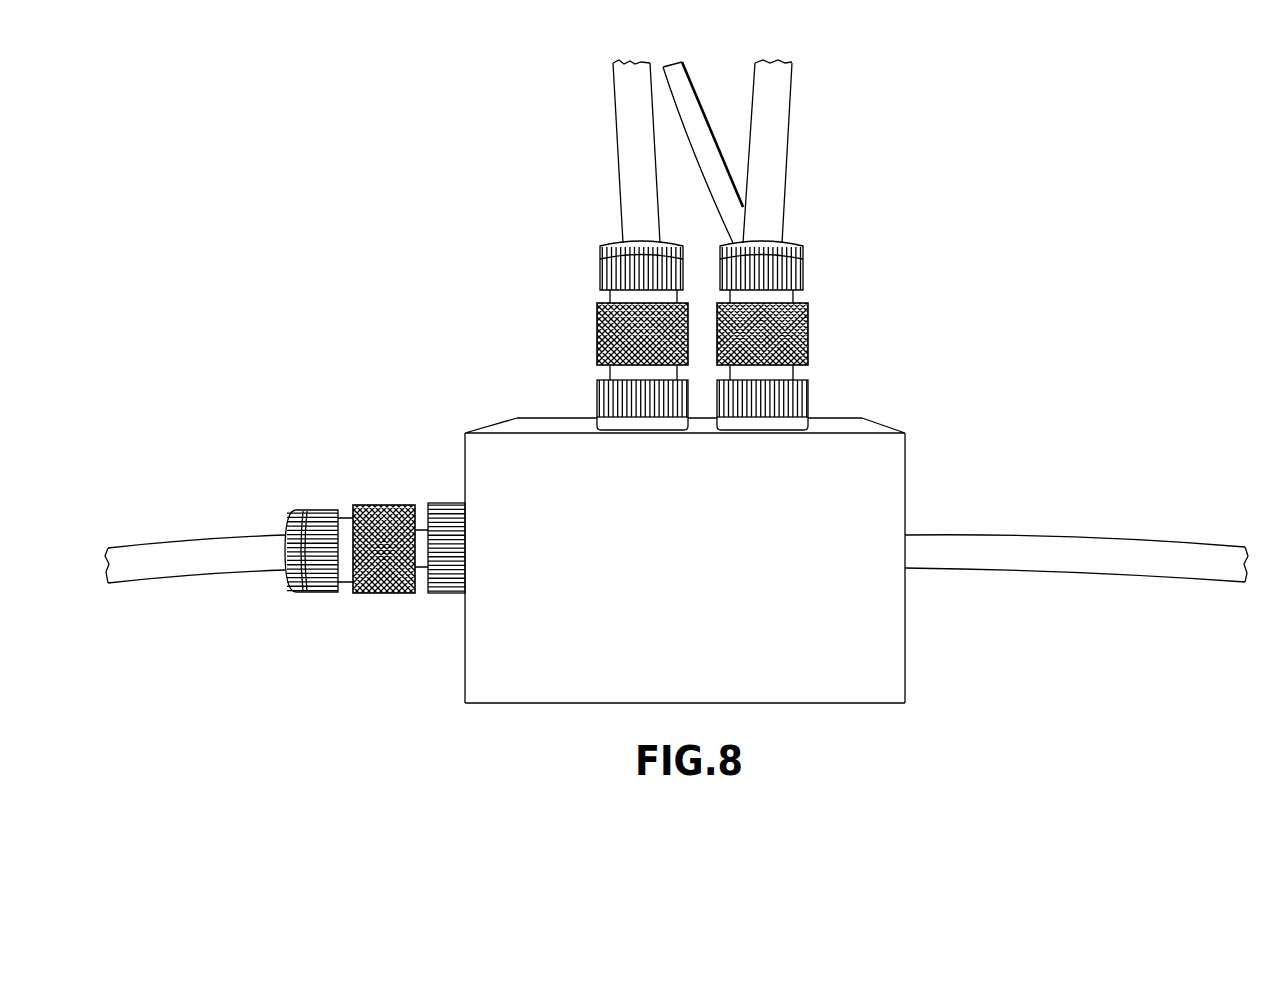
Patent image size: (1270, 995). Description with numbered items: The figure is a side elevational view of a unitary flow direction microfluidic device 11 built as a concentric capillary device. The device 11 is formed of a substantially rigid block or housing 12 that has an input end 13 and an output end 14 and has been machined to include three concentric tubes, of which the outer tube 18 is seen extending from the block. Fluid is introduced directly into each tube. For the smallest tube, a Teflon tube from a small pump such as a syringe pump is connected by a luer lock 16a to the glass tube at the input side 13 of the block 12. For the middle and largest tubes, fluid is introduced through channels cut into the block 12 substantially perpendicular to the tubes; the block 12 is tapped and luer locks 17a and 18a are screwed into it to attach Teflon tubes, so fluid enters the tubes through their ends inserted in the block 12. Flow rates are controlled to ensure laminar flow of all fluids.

The unitary flow direction microfluidic device 11 is at (427, 235).
The housing 12 is at (723, 585).
The input end 13 is at (465, 677).
The output end 14 is at (905, 658).
The luer lock fitting 16a is at (392, 590).
The luer lock fitting 17a is at (598, 338).
The luer lock fitting 18a is at (807, 320).
The outer tube 18 is at (1142, 570).